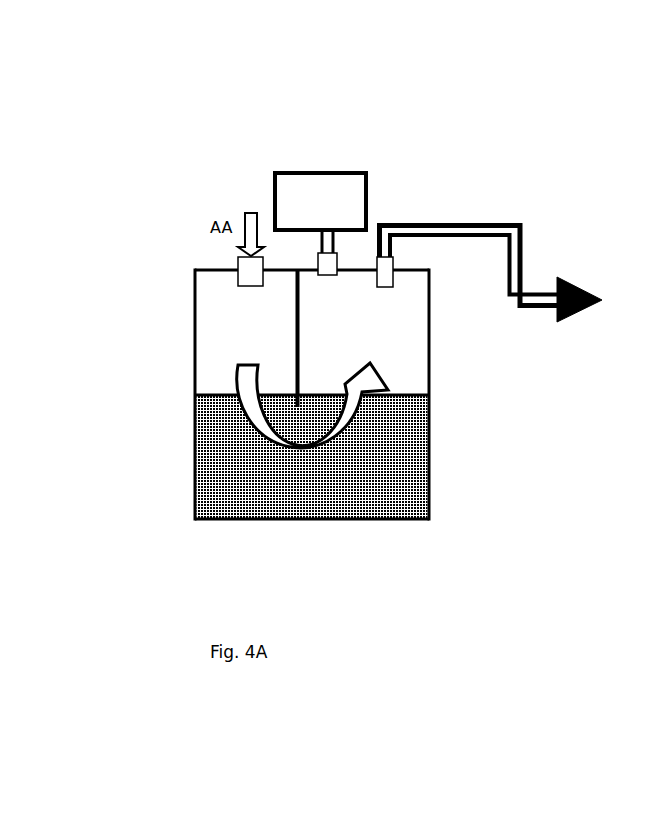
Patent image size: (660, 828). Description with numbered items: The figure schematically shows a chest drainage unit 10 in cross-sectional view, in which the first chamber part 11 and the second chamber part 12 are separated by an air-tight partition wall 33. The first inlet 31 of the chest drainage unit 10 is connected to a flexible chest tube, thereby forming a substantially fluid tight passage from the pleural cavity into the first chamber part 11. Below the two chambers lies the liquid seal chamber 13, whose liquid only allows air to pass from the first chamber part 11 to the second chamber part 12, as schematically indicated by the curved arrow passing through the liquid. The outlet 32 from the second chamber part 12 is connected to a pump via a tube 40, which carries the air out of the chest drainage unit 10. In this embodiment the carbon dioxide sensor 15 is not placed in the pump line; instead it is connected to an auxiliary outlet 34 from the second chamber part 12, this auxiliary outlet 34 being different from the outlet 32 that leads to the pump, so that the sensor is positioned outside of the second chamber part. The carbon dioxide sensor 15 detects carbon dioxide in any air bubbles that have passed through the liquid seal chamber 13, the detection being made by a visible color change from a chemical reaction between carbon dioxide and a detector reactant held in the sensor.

The chest drainage unit 10 is at (115, 150).
The first chamber part 11 is at (240, 330).
The second chamber part 12 is at (390, 343).
The liquid seal chamber 13 is at (312, 440).
The carbon dioxide sensor 15 is at (288, 134).
The first inlet 31 is at (233, 265).
The outlet 32 is at (398, 288).
The partition wall 33 is at (309, 363).
The auxiliary outlet 34 is at (334, 277).
The tube 40 is at (460, 207).